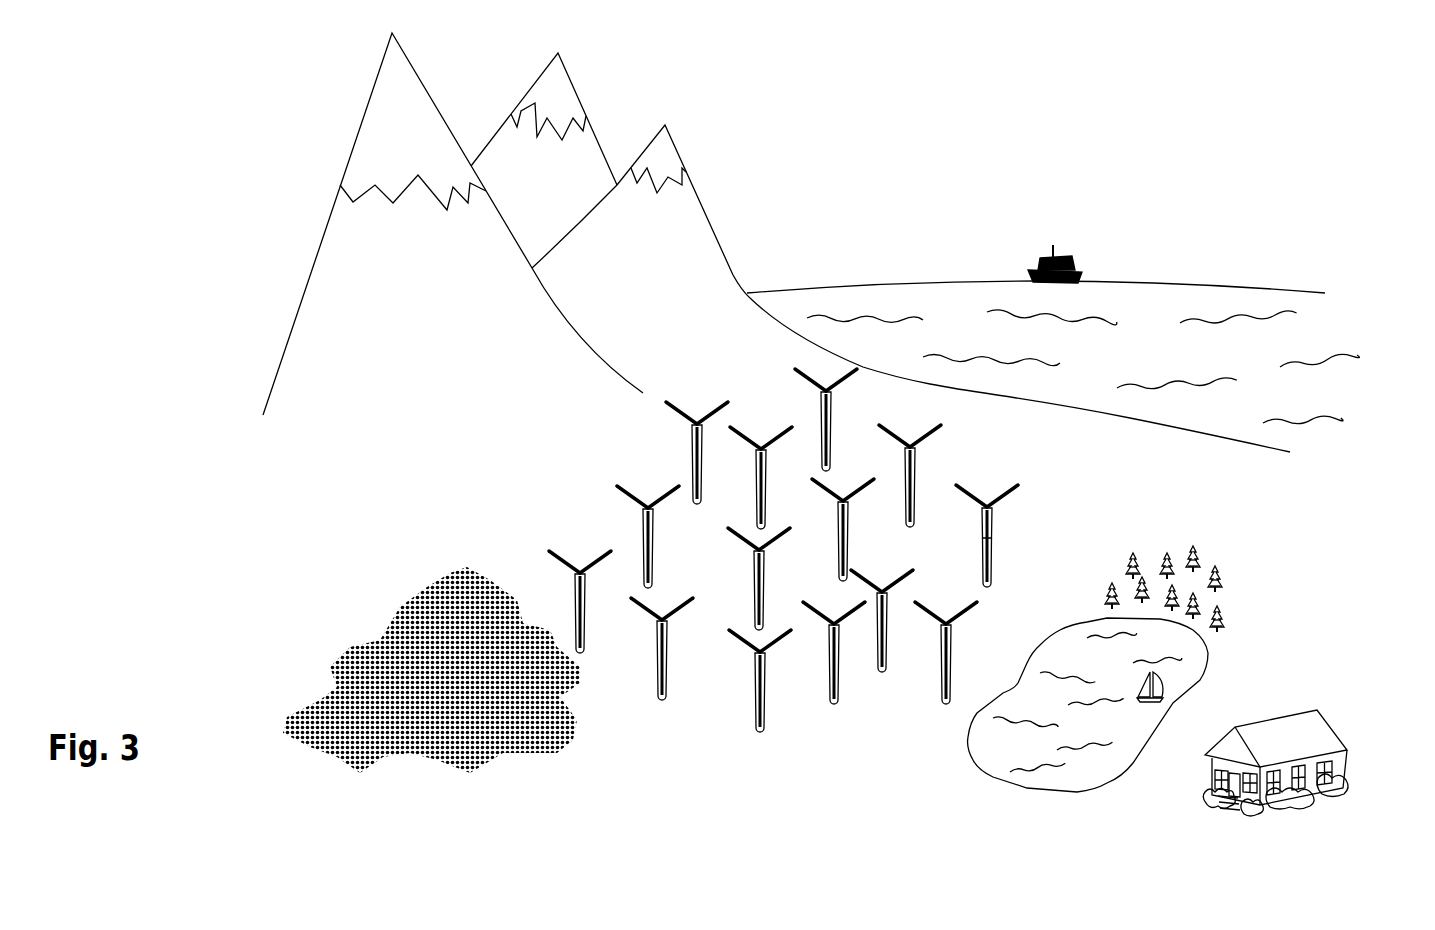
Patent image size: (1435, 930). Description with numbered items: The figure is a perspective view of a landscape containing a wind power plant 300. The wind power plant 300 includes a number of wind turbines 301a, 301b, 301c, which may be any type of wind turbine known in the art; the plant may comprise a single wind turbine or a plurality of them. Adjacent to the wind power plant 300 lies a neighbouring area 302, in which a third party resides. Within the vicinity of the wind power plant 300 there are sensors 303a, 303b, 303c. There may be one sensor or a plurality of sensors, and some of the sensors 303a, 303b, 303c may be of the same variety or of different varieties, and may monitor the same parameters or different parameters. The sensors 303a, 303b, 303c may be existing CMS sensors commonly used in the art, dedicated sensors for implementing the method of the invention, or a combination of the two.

The wind power plant 300 is at (592, 488).
The wind turbine 301a is at (822, 412).
The wind turbine 301b is at (1008, 490).
The wind turbine 301c is at (742, 625).
The neighbouring area 302 is at (1292, 732).
The sensor 303a is at (988, 565).
The sensor 303b is at (793, 685).
The sensor 303c is at (697, 425).